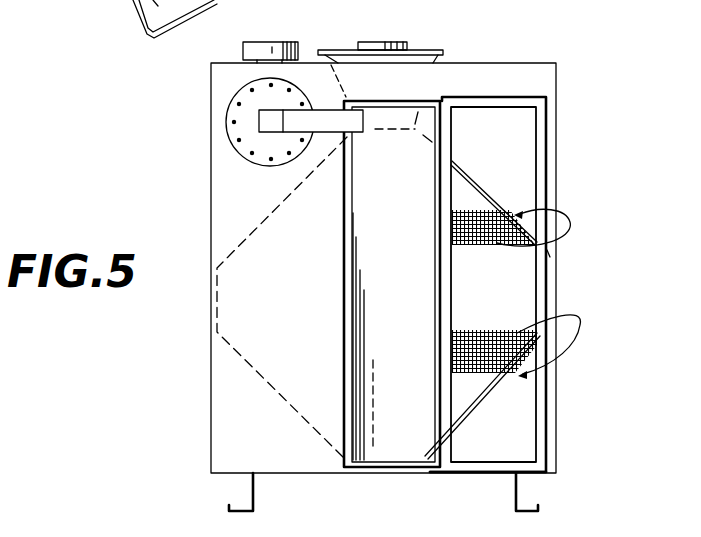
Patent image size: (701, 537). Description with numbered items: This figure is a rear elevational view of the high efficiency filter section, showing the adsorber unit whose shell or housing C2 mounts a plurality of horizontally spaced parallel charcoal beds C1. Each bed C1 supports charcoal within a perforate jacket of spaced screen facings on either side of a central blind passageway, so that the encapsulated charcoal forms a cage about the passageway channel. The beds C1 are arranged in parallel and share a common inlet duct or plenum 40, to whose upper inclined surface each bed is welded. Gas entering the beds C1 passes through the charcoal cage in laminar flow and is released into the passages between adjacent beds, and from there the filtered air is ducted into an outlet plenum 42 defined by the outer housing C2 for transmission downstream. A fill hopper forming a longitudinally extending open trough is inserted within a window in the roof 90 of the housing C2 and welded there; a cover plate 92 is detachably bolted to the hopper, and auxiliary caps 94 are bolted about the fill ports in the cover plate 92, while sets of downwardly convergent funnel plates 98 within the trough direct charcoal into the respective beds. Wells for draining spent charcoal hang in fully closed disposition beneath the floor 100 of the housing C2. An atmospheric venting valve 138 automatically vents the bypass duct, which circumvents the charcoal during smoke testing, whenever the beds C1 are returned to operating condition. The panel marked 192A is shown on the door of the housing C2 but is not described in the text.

The inlet plenum 40 is at (93, 0).
The roof 90 is at (482, 62).
The housing C2 is at (211, 170).
The atmospheric venting valve 138 is at (297, 18).
The cover plate 92 is at (463, 18).
The auxiliary cap 94 is at (401, 12).
The charcoal bed C1 is at (490, 186).
The outlet plenum 42 is at (517, 200).
The floor 100 is at (462, 473).
The door panel 192A is at (427, 177).
The funnel plate 98 is at (428, 73).